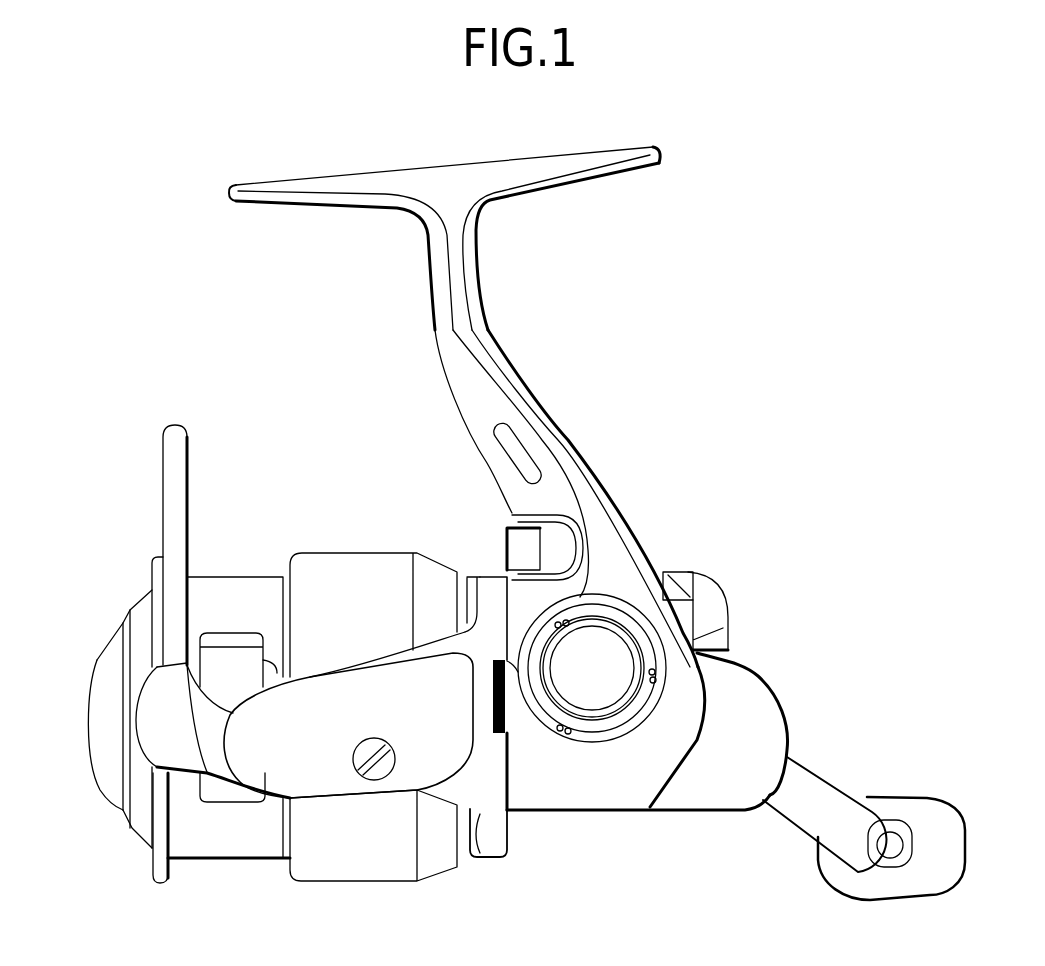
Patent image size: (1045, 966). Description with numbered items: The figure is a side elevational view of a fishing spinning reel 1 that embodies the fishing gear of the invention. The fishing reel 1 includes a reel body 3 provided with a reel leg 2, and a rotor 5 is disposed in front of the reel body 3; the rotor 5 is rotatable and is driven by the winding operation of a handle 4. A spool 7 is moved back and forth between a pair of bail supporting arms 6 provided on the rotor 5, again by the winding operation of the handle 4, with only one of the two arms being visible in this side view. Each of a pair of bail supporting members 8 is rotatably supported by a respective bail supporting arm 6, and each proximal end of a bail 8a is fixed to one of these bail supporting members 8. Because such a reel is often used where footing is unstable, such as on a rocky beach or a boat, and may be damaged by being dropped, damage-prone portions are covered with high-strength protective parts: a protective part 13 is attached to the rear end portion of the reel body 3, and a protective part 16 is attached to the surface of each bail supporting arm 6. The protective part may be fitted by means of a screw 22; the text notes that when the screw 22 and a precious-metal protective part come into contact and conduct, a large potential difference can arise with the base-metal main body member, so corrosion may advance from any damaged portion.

The fishing reel 1 is at (620, 391).
The reel leg 2 is at (598, 173).
The reel body 3 is at (632, 540).
The handle 4 is at (897, 798).
The rotor 5 is at (484, 575).
The bail supporting arm 6 is at (440, 780).
The spool 7 is at (372, 562).
The bail supporting member 8 is at (190, 768).
The bail 8a is at (180, 462).
The protective part 13 is at (767, 693).
The protective part 16 is at (305, 680).
The screw 22 is at (378, 777).